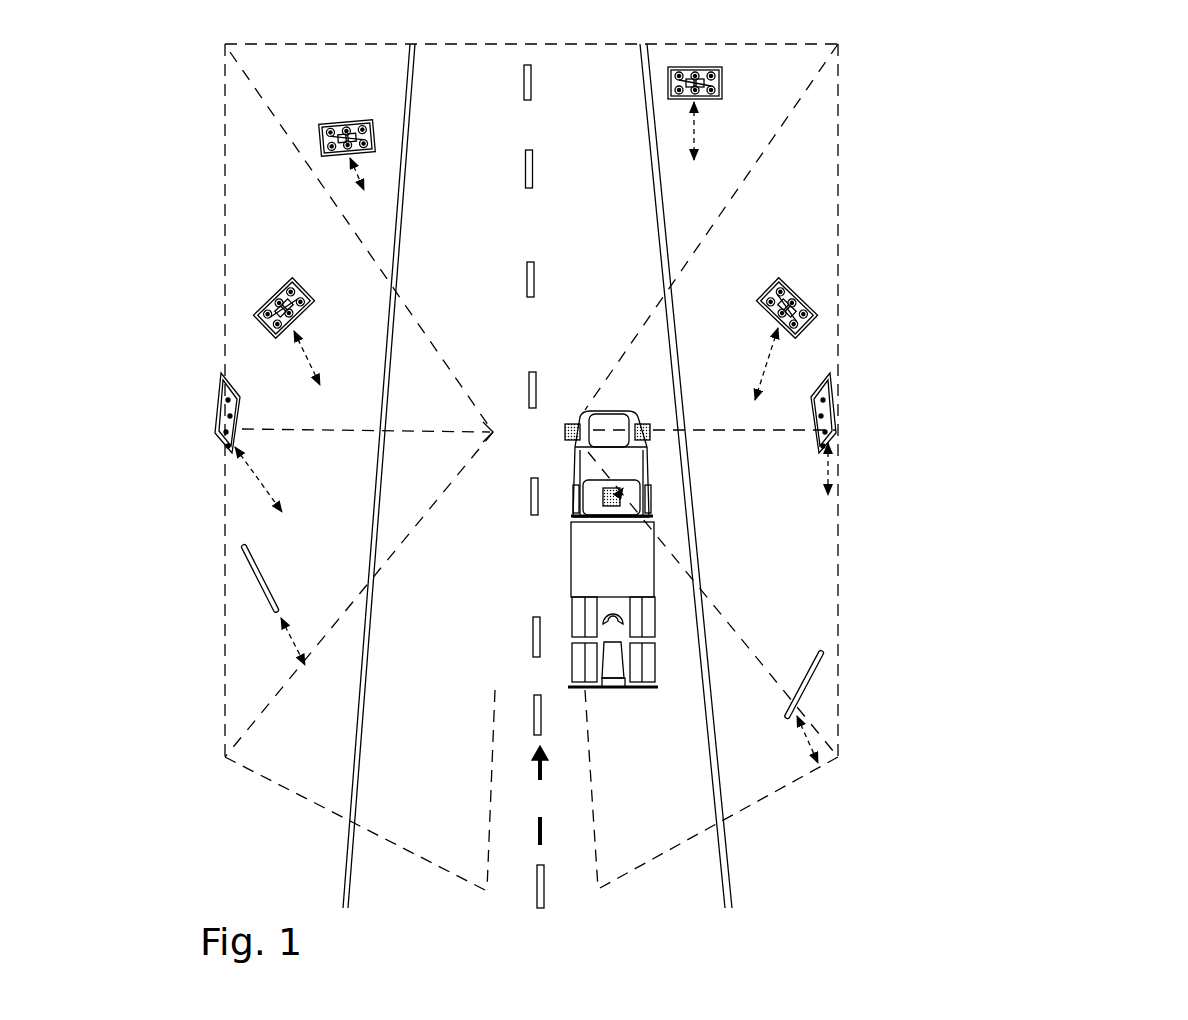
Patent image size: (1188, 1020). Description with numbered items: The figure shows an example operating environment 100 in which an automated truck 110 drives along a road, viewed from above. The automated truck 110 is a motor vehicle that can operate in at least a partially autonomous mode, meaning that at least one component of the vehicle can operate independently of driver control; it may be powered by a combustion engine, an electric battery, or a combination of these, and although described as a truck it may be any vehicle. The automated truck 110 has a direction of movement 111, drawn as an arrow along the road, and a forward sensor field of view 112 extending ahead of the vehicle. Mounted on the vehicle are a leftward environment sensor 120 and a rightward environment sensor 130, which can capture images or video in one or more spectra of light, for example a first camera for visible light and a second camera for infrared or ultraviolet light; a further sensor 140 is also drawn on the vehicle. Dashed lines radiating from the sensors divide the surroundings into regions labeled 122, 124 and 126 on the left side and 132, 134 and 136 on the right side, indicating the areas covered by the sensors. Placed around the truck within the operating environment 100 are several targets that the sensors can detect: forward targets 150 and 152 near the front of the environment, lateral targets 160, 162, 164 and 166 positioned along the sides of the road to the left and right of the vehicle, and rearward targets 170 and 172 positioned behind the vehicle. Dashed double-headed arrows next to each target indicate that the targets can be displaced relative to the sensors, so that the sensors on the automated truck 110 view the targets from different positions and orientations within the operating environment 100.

The operating environment 100 is at (1111, 70).
The automated truck 110 is at (602, 570).
The direction of movement 111 is at (541, 795).
The forward sensor field of view 112 is at (519, 343).
The leftward environment sensor 120 is at (565, 432).
The first field of view region 122 is at (413, 397).
The second field of view region 124 is at (413, 469).
The third field of view region 126 is at (416, 619).
The rightward environment sensor 130 is at (644, 425).
The fourth field of view region 132 is at (613, 397).
The fifth field of view region 134 is at (709, 469).
The sixth field of view region 136 is at (627, 743).
The third sensor 140 is at (603, 500).
The roadside unit 150 is at (334, 124).
The roadside unit 152 is at (722, 86).
The lateral target 160 is at (272, 290).
The lateral target 162 is at (232, 378).
The lateral target 164 is at (806, 300).
The lateral target 166 is at (817, 378).
The rearward target 170 is at (255, 555).
The rearward target 172 is at (808, 655).